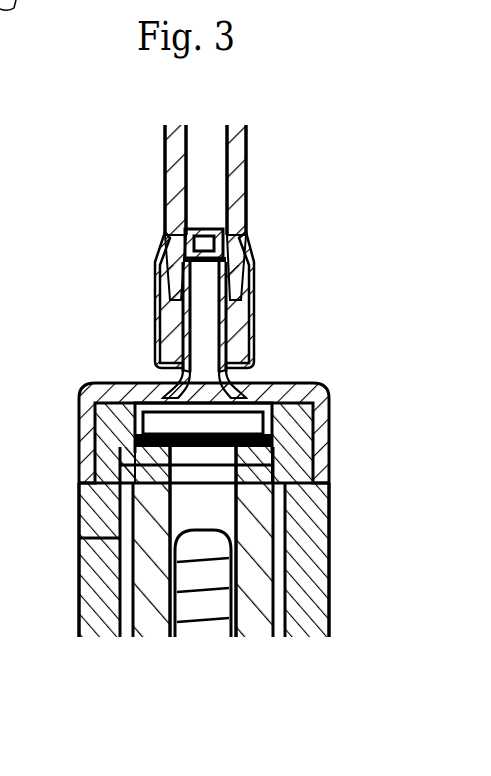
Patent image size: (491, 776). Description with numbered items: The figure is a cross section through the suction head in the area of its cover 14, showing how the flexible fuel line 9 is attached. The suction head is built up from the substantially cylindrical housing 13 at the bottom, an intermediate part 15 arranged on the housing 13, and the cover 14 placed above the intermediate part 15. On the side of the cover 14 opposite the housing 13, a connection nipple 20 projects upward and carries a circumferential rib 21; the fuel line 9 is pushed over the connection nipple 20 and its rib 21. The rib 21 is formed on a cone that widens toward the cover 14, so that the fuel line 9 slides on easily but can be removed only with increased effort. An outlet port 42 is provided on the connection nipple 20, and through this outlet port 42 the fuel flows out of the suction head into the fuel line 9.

The fuel line 9 is at (237, 197).
The outlet port 42 is at (193, 230).
The circumferential rib 21 is at (257, 293).
The connection nipple 20 is at (170, 332).
The cover 14 is at (290, 388).
The intermediate part 15 is at (82, 490).
The housing 13 is at (82, 580).